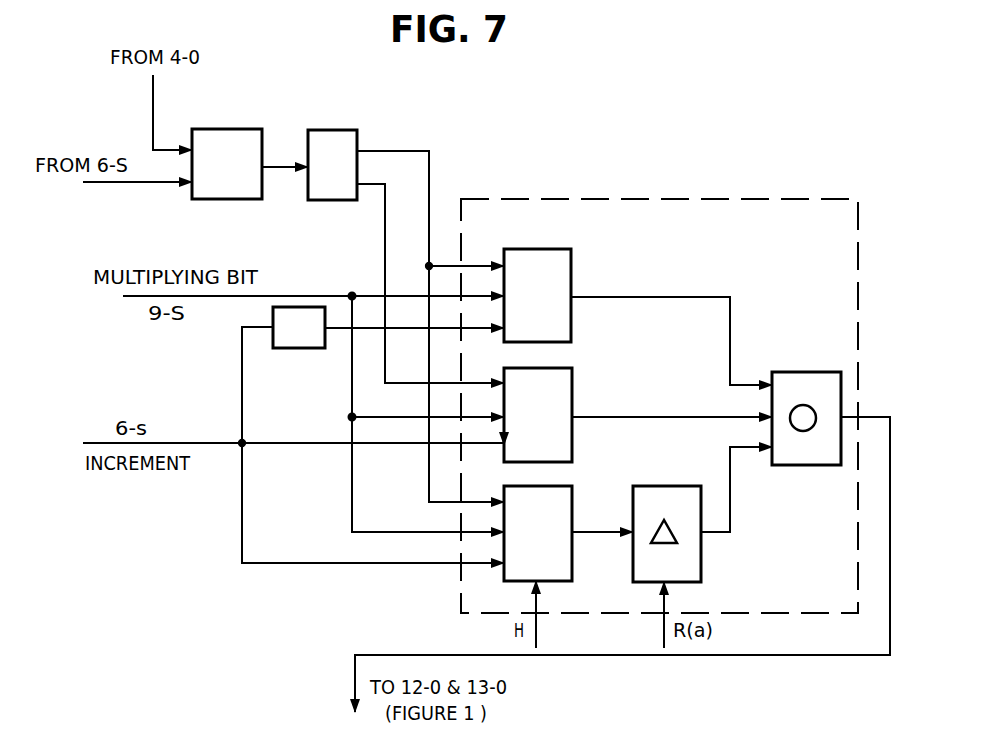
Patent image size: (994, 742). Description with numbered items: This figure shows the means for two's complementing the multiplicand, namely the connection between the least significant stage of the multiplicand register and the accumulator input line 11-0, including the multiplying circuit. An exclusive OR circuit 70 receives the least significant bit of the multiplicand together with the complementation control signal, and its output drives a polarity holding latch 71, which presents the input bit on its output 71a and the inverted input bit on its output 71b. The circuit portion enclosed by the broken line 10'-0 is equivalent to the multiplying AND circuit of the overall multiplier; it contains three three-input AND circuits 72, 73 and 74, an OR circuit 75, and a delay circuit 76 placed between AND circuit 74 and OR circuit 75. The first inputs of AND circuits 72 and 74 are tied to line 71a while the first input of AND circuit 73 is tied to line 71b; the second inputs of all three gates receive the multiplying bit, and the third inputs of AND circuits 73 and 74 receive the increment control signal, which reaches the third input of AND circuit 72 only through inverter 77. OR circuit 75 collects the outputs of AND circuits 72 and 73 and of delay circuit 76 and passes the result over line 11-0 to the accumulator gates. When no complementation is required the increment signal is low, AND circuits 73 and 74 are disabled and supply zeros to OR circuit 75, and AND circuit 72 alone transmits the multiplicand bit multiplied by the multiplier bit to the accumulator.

The exclusive OR circuit 70 is at (238, 128).
The polarity holding latch 71 is at (324, 127).
The latch output 71a is at (383, 143).
The latch output 71b is at (386, 242).
The AND circuit 72 is at (571, 266).
The AND circuit 73 is at (573, 397).
The AND circuit 74 is at (573, 507).
The OR circuit 75 is at (805, 370).
The delay circuit 76 is at (656, 485).
The inverter 77 is at (305, 349).
The circuit 10'-0 is at (659, 388).
The line 11-0 is at (877, 413).